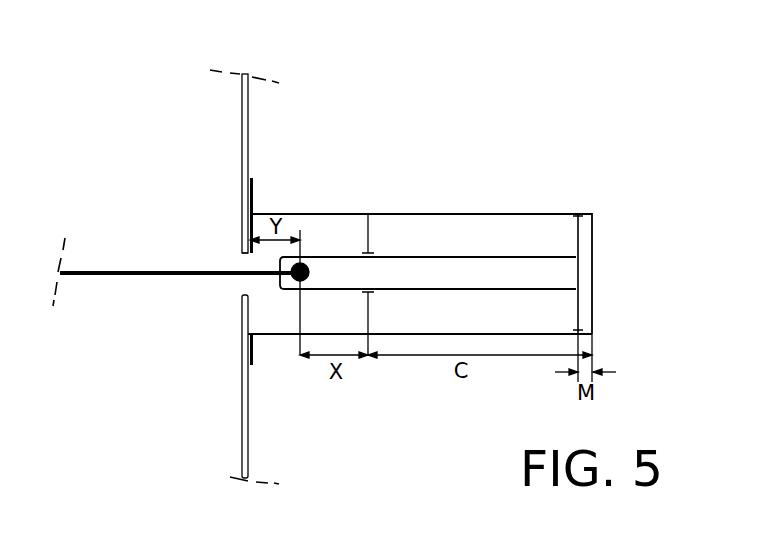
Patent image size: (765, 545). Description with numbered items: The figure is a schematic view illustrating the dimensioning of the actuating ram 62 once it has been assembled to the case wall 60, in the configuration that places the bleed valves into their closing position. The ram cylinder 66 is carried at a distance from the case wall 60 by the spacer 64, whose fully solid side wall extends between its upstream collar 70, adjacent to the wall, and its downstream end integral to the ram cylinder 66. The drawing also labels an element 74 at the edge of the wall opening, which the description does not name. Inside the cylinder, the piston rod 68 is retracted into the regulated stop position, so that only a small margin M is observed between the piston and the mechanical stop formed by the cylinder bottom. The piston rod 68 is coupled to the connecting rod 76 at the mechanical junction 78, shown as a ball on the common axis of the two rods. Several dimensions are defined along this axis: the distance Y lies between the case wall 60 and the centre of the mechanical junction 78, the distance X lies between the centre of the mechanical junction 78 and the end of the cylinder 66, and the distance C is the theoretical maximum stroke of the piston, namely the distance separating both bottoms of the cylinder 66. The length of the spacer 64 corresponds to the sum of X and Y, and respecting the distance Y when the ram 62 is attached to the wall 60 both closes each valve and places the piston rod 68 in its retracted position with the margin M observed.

The case wall 60 is at (252, 78).
The actuating ram 62 is at (587, 208).
The spacer 64 is at (327, 213).
The ram cylinder 66 is at (515, 334).
The piston rod 68 is at (473, 268).
The upstream collar 70 is at (253, 186).
The wall opening edge 74 is at (243, 253).
The connecting rod 76 is at (123, 276).
The mechanical junction 78 is at (295, 279).